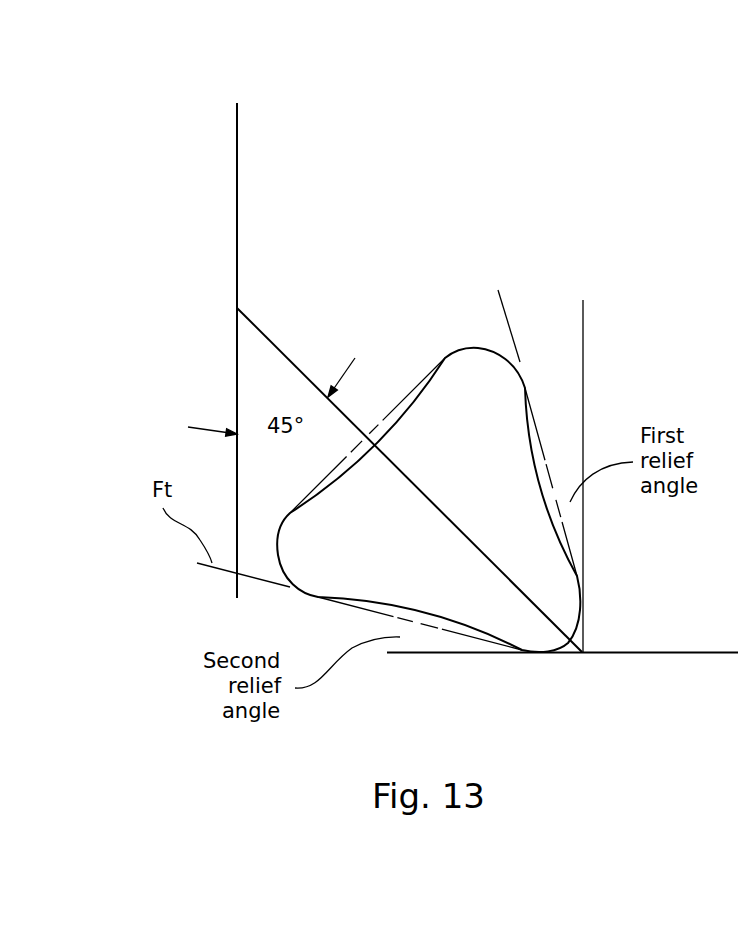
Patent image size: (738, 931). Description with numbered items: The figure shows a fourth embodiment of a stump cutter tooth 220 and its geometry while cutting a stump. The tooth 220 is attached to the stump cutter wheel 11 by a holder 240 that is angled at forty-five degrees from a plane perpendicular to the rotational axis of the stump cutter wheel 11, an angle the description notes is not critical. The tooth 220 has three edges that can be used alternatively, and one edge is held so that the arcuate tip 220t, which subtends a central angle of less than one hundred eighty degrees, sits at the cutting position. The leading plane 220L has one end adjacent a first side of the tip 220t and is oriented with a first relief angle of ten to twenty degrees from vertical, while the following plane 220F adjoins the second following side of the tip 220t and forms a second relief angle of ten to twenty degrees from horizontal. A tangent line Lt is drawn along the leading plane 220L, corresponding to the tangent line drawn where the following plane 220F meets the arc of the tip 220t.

The stump cutter wheel 11 is at (237, 177).
The holder 240 is at (268, 340).
The stump cutter tooth 220 is at (537, 363).
The tip 220t is at (476, 347).
The leading plane 220L is at (573, 572).
The following plane 220F is at (455, 635).
The leading tangent line Lt is at (503, 308).